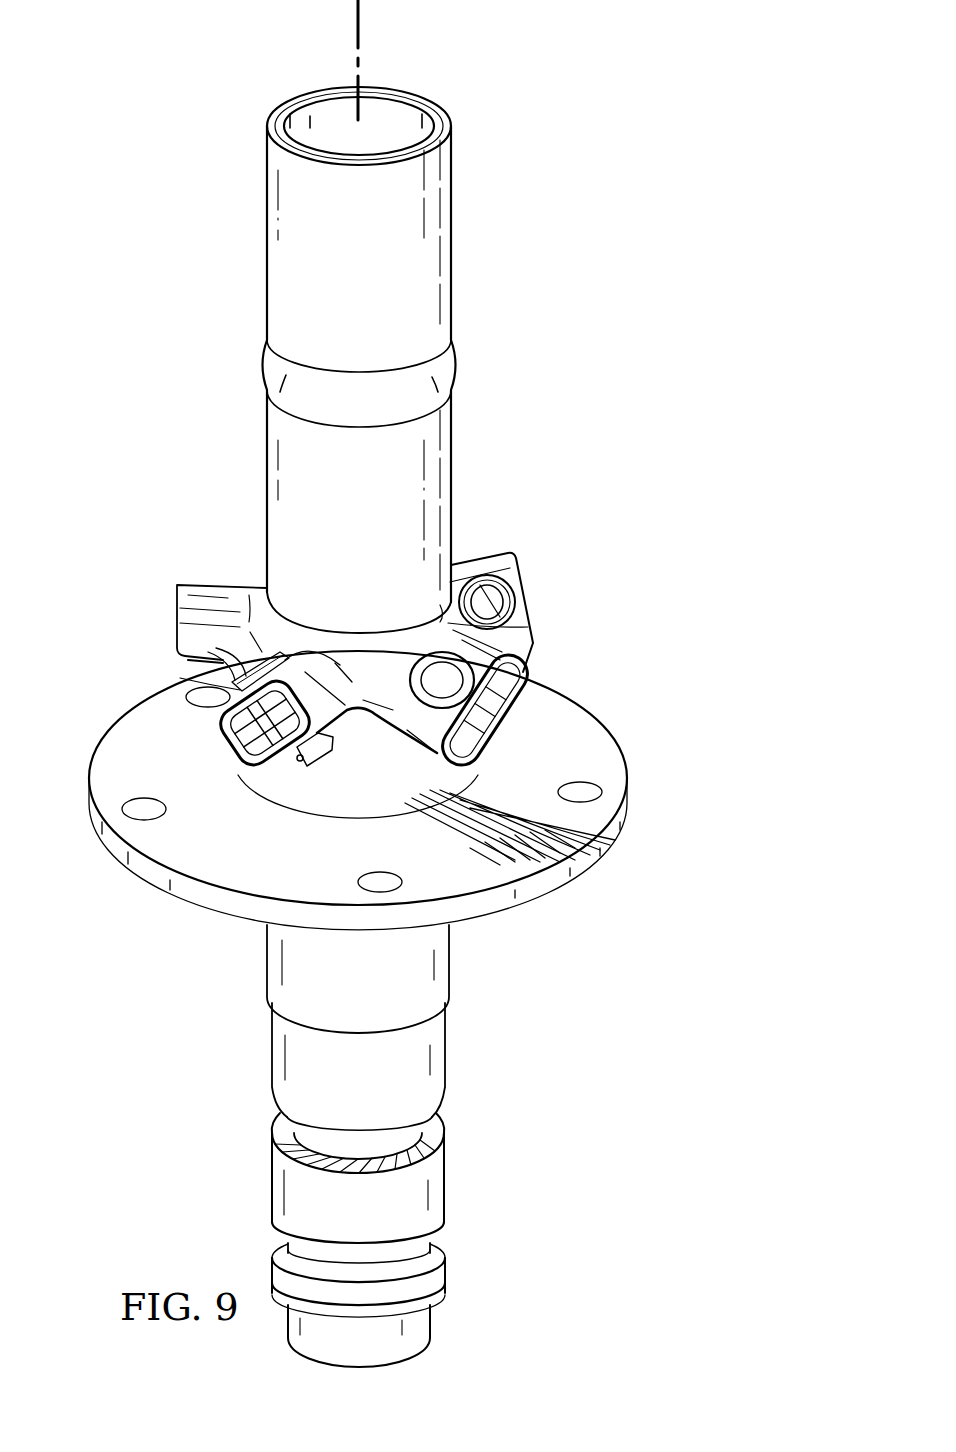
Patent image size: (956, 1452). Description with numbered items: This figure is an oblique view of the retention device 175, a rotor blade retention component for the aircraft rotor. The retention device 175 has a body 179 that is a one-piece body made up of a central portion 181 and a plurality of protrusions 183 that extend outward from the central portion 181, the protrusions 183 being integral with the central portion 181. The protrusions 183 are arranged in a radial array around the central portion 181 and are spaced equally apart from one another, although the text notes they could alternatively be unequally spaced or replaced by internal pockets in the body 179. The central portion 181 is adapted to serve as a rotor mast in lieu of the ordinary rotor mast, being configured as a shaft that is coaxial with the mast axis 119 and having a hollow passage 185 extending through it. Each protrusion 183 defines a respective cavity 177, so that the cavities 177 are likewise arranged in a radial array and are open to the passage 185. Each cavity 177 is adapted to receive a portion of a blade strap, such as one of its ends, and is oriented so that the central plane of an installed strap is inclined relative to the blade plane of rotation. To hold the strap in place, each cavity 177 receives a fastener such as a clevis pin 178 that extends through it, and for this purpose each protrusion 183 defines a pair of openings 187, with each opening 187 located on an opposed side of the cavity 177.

The retention device 175 is at (125, 105).
The mast axis 119 is at (362, 26).
The hollow passage 185 is at (327, 115).
The central portion 181 is at (267, 440).
The body 179 is at (449, 423).
The protrusion 183 is at (200, 586).
The opening 187 is at (432, 697).
The clevis pin 178 is at (323, 748).
The cavity 177 is at (237, 770).